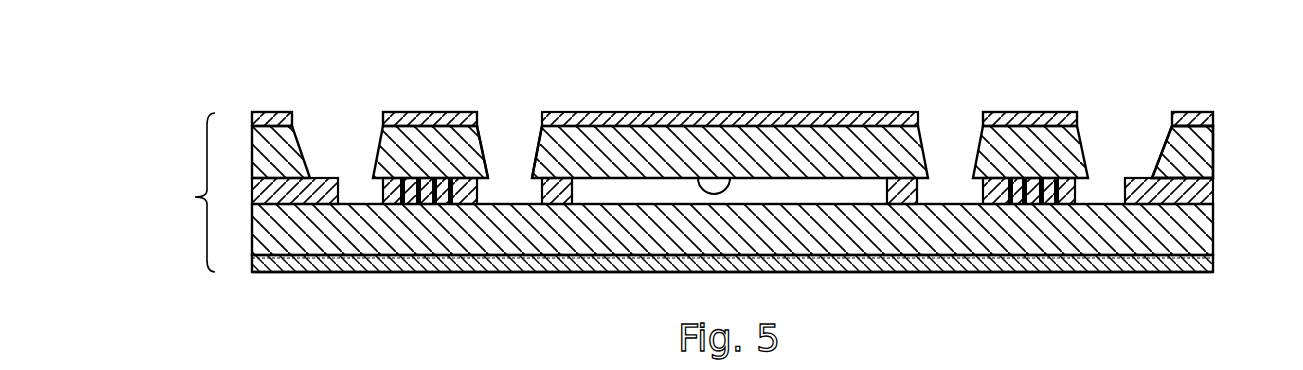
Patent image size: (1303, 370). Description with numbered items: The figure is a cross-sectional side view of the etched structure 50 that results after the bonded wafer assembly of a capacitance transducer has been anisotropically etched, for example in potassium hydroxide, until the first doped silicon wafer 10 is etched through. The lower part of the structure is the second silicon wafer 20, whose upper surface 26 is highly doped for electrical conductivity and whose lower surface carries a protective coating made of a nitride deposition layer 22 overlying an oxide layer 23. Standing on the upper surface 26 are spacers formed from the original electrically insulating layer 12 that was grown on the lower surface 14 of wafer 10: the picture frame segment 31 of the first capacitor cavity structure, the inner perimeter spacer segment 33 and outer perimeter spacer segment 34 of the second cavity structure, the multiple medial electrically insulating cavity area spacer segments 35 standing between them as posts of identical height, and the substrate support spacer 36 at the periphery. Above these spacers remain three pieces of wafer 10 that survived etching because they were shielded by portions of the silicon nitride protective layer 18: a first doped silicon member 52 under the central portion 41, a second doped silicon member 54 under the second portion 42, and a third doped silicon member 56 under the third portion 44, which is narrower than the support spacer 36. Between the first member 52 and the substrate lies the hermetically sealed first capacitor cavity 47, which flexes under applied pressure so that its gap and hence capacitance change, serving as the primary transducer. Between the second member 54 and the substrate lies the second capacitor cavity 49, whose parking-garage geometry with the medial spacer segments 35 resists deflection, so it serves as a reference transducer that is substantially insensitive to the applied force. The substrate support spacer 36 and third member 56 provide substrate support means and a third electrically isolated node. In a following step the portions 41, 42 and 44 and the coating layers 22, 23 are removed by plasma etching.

The first doped silicon wafer 10 is at (1087, 150).
The electrically insulating layer 12 is at (1213, 190).
The lower surface 14 is at (382, 138).
The protective layer 18 is at (383, 117).
The second silicon wafer 20 is at (1213, 220).
The nitride deposition layer 22 is at (1180, 273).
The oxide layer 23 is at (1213, 258).
The upper surface 26 is at (827, 203).
The picture frame segment 31 is at (572, 190).
The inner perimeter spacer segment 33 is at (477, 190).
The outer perimeter spacer segment 34 is at (383, 190).
The medial electrically insulating cavity area spacer segments 35 is at (458, 204).
The substrate support spacer 36 is at (252, 195).
The central portion 41 is at (655, 112).
The second portion 42 is at (440, 112).
The third portion 44 is at (267, 112).
The first capacitor cavity 47 is at (787, 197).
The second capacitor cavity 49 is at (1008, 204).
The etched structure 50 is at (187, 192).
The first doped silicon member 52 is at (533, 165).
The second doped silicon member 54 is at (483, 135).
The third doped silicon member 56 is at (252, 158).